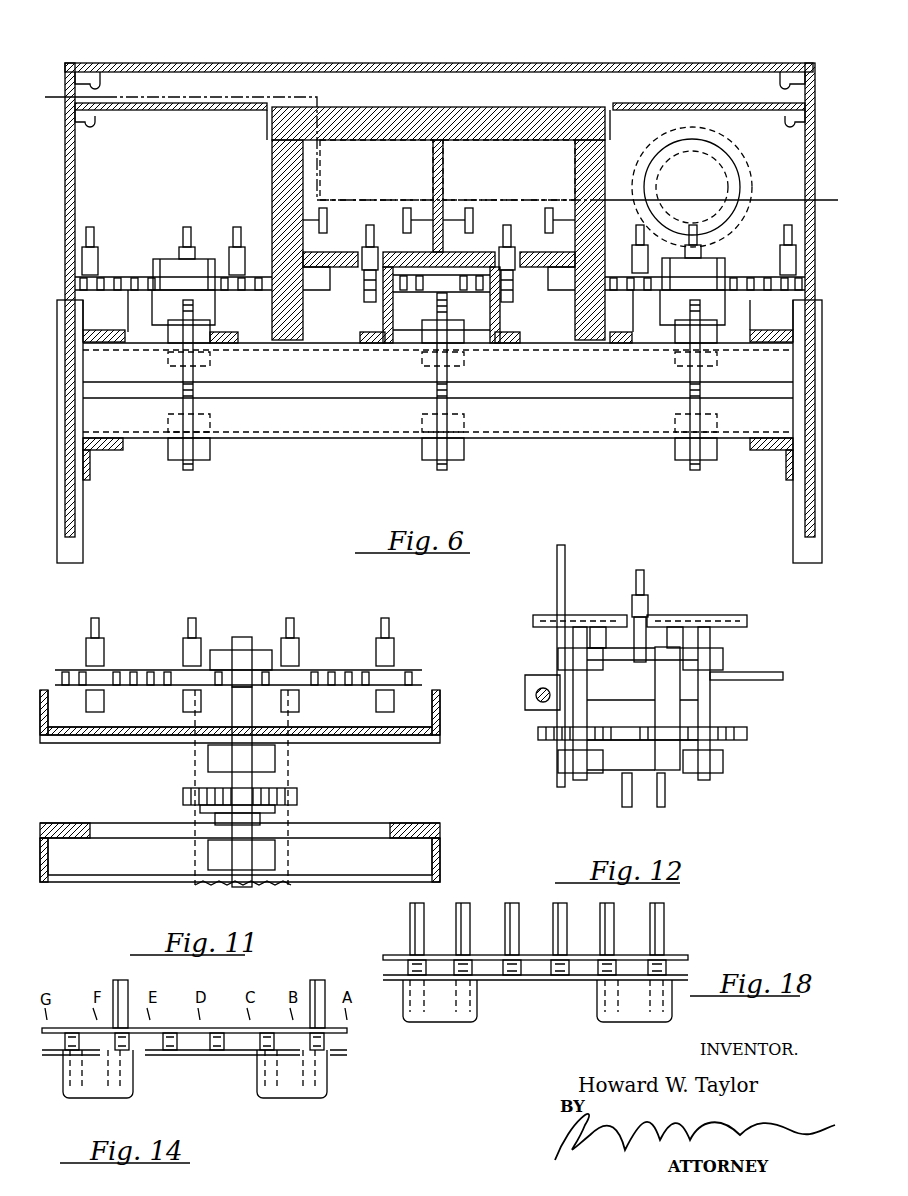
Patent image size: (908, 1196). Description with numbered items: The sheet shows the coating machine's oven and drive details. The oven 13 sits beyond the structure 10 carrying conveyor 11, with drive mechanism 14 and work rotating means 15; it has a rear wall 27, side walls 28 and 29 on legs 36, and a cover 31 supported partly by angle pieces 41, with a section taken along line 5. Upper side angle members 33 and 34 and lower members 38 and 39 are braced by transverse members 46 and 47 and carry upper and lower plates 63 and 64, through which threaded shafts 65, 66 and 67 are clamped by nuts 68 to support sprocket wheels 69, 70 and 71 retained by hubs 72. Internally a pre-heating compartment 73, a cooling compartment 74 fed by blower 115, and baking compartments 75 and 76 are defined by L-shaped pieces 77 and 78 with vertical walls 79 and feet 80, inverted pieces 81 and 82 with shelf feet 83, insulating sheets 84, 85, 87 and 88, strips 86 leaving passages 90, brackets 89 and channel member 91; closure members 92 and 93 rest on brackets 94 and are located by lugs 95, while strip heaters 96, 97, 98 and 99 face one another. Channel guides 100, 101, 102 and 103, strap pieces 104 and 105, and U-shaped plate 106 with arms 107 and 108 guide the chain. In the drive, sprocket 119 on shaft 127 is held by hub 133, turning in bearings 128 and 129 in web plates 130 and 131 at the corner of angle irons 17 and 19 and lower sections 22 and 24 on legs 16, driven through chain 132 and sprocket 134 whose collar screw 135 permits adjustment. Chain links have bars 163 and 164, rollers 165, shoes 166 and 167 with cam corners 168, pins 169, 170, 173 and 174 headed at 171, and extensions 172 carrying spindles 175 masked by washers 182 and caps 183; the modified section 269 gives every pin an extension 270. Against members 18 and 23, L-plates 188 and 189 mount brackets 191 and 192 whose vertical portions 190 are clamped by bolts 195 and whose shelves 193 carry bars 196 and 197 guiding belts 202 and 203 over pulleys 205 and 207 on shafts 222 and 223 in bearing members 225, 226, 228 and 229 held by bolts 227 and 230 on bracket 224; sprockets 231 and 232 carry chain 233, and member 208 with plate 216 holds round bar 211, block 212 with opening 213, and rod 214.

In FIG. 6, the section line 5- 5 is at (55, 90).
In FIG. 11, the structure 10 is at (110, 892).
In FIG. 12, the structure 10 is at (622, 822).
In FIG. 6, the conveyor 11 is at (122, 266).
In FIG. 11, the conveyor 11 is at (415, 660).
In FIG. 12, the conveyor 11 is at (661, 603).
In FIG. 14, the conveyor 11 is at (87, 1014).
In FIG. 6, the oven 13 is at (392, 60).
In FIG. 11, the conveyor driving mechanism 14 is at (162, 892).
In FIG. 12, the work rotating means 15 is at (705, 587).
In FIG. 11, the legs 16 is at (288, 762).
In FIG. 11, the front upper angle iron member 17 is at (432, 743).
In FIG. 12, the rear upper angle iron member 18 is at (650, 672).
In FIG. 11, the end angle iron 19 is at (72, 735).
In FIG. 11, the lower frame section 22 is at (440, 847).
In FIG. 12, the lower frame section 23 is at (632, 810).
In FIG. 11, the lower frame section 24 is at (65, 823).
In FIG. 6, the rear wall 27 is at (478, 63).
In FIG. 6, the side wall 28 is at (76, 190).
In FIG. 6, the side wall 29 is at (804, 166).
In FIG. 6, the cover structure 31 is at (510, 63).
In FIG. 6, the side angle iron member 33 is at (112, 345).
In FIG. 6, the side angle iron member 34 is at (778, 345).
In FIG. 6, the legs 36 is at (66, 563).
In FIG. 6, the lower frame angle iron length 38 is at (108, 450).
In FIG. 6, the lower frame angle iron length 39 is at (775, 450).
In FIG. 6, the angle pieces 41 is at (110, 72).
In FIG. 6, the upper transverse brace 46 is at (438, 362).
In FIG. 6, the lower transverse brace 47 is at (438, 418).
In FIG. 6, the upper plate 63 is at (330, 352).
In FIG. 6, the lower plate 64 is at (333, 440).
In FIG. 6, the threaded shaft 65 is at (188, 472).
In FIG. 6, the threaded shaft 66 is at (442, 472).
In FIG. 6, the threaded shaft 67 is at (694, 472).
In FIG. 6, the nuts 68 is at (166, 335).
In FIG. 6, the sprocket wheel 69 is at (160, 258).
In FIG. 6, the sprocket wheel 70 is at (460, 330).
In FIG. 6, the sprocket wheel 71 is at (712, 262).
In FIG. 6, the hub 72 is at (200, 258).
In FIG. 6, the pre-heating compartment 73 is at (180, 152).
In FIG. 6, the cooling compartment 74 is at (760, 148).
In FIG. 6, the baking compartment 75 is at (376, 170).
In FIG. 6, the baking compartment 76 is at (509, 170).
In FIG. 6, the L-shaped metal piece 77 is at (262, 173).
In FIG. 6, the L-shaped metal piece 78 is at (618, 161).
In FIG. 6, the vertical wall 79 is at (272, 153).
In FIG. 6, the foot portion 80 is at (290, 343).
In FIG. 6, the inverted L-shaped piece 81 is at (314, 324).
In FIG. 6, the inverted L-shaped piece 82 is at (565, 320).
In FIG. 6, the foot portion 83 is at (439, 282).
In FIG. 6, the insulating sheets 84 is at (275, 195).
In FIG. 6, the insulating sheets 85 is at (408, 107).
In FIG. 6, the insulating strips 86 is at (522, 252).
In FIG. 6, the insulating sheet 87 is at (443, 160).
In FIG. 6, the insulating sheet 88 is at (393, 252).
In FIG. 6, the brackets 89 is at (480, 248).
In FIG. 6, the slot-like passages 90 is at (442, 212).
In FIG. 6, the inverted channel member 91 is at (455, 343).
In FIG. 6, the top wall 92 is at (158, 103).
In FIG. 6, the top wall 93 is at (688, 103).
In FIG. 6, the brackets 94 is at (90, 130).
In FIG. 6, the lugs 95 is at (265, 118).
In FIG. 6, the electric strip heater 96 is at (330, 208).
In FIG. 6, the electric strip heater 97 is at (405, 208).
In FIG. 6, the electric strip heater 98 is at (470, 208).
In FIG. 6, the electric strip heater 99 is at (548, 208).
In FIG. 6, the channel guide 100 is at (222, 345).
In FIG. 6, the channel guide 101 is at (360, 324).
In FIG. 6, the channel guide 102 is at (520, 324).
In FIG. 6, the channel guide 103 is at (622, 343).
In FIG. 6, the strap piece 104 is at (238, 345).
In FIG. 6, the strap piece 105 is at (652, 343).
In FIG. 6, the U-shaped plate 106 is at (420, 340).
In FIG. 6, the arm 107 is at (370, 343).
In FIG. 6, the arm 108 is at (505, 343).
In FIG. 6, the blower 115 is at (700, 138).
In FIG. 11, the sprocket 119 is at (255, 670).
In FIG. 11, the shaft 127 is at (245, 637).
In FIG. 11, the bearing 128 is at (208, 765).
In FIG. 11, the bearing 129 is at (208, 860).
In FIG. 11, the upper web plate 130 is at (375, 743).
In FIG. 11, the lower web plate 131 is at (385, 823).
In FIG. 11, the driving chain 132 is at (297, 795).
In FIG. 11, the hub 133 is at (220, 650).
In FIG. 11, the sprocket 134 is at (275, 810).
In FIG. 11, the screw 135 is at (215, 815).
In FIG. 14, the upper bar 163 is at (60, 1028).
In FIG. 18, the upper bar 163 is at (395, 955).
In FIG. 14, the lower bar 164 is at (55, 1055).
In FIG. 18, the lower bar 164 is at (688, 976).
In FIG. 14, the rollers 165 is at (82, 1050).
In FIG. 18, the rollers 165 is at (425, 977).
In FIG. 14, the shoe 166 is at (298, 1100).
In FIG. 18, the shoe 166 is at (635, 1022).
In FIG. 14, the shoe 167 is at (105, 1100).
In FIG. 18, the shoe 167 is at (445, 1022).
In FIG. 14, the cam-like corner portion 168 is at (70, 1098).
In FIG. 18, the cam-like corner portion 168 is at (418, 1025).
In FIG. 14, the pin 169 is at (322, 1090).
In FIG. 18, the pin 169 is at (675, 1008).
In FIG. 14, the pin 170 is at (268, 1093).
In FIG. 18, the pin 170 is at (672, 990).
In FIG. 14, the headed lower ends 171 is at (75, 1100).
In FIG. 18, the headed lower ends 171 is at (420, 1025).
In FIG. 14, the enlarged diameter extension 172 is at (128, 990).
In FIG. 14, the pin 173 is at (92, 1100).
In FIG. 18, the pin 173 is at (478, 1010).
In FIG. 14, the pin 174 is at (68, 1088).
In FIG. 18, the pin 174 is at (408, 1008).
In FIG. 6, the work carrying spindle 175 is at (380, 214).
In FIG. 11, the work carrying spindle 175 is at (106, 611).
In FIG. 12, the work carrying spindle 175 is at (648, 565).
In FIG. 6, the washer 182 is at (100, 250).
In FIG. 11, the washer 182 is at (105, 638).
In FIG. 12, the washer 182 is at (650, 595).
In FIG. 6, the sheet metal cap 183 is at (98, 225).
In FIG. 11, the sheet metal cap 183 is at (116, 626).
In FIG. 12, the sheet metal cap 183 is at (657, 576).
In FIG. 12, the L-plate 188 is at (664, 800).
In FIG. 12, the L-plate 189 is at (622, 800).
In FIG. 12, the vertical portion 190 is at (612, 787).
In FIG. 12, the brackets 191 is at (610, 787).
In FIG. 12, the brackets 192 is at (690, 790).
In FIG. 12, the shelf-like portion 193 is at (593, 627).
In FIG. 12, the bolts 195 is at (618, 688).
In FIG. 12, the bar 196 is at (605, 627).
In FIG. 12, the bar 197 is at (690, 627).
In FIG. 12, the belt 202 is at (747, 621).
In FIG. 12, the belt 203 is at (533, 621).
In FIG. 12, the pulley 205 is at (745, 615).
In FIG. 12, the pulley 207 is at (540, 615).
In FIG. 12, the member 208 is at (783, 675).
In FIG. 12, the round bar 211 is at (536, 697).
In FIG. 12, the block 212 is at (528, 710).
In FIG. 12, the opening 213 is at (532, 715).
In FIG. 12, the vertical rod 214 is at (566, 548).
In FIG. 12, the plate 216 is at (718, 680).
In FIG. 12, the shaft 222 is at (710, 640).
In FIG. 12, the shaft 223 is at (573, 640).
In FIG. 12, the bracket 224 is at (695, 713).
In FIG. 12, the bearing member 225 is at (723, 652).
In FIG. 12, the bearing member 226 is at (723, 768).
In FIG. 12, the bolts 227 is at (723, 663).
In FIG. 12, the bearing member 228 is at (558, 655).
In FIG. 12, the bearing member 229 is at (558, 768).
In FIG. 12, the bolts 230 is at (565, 668).
In FIG. 12, the sprocket wheel 231 is at (747, 730).
In FIG. 12, the sprocket wheel 232 is at (545, 740).
In FIG. 12, the chain 233 is at (640, 727).
In FIG. 18, the chain section 269 is at (720, 941).
In FIG. 18, the enlarged extension 270 is at (420, 910).